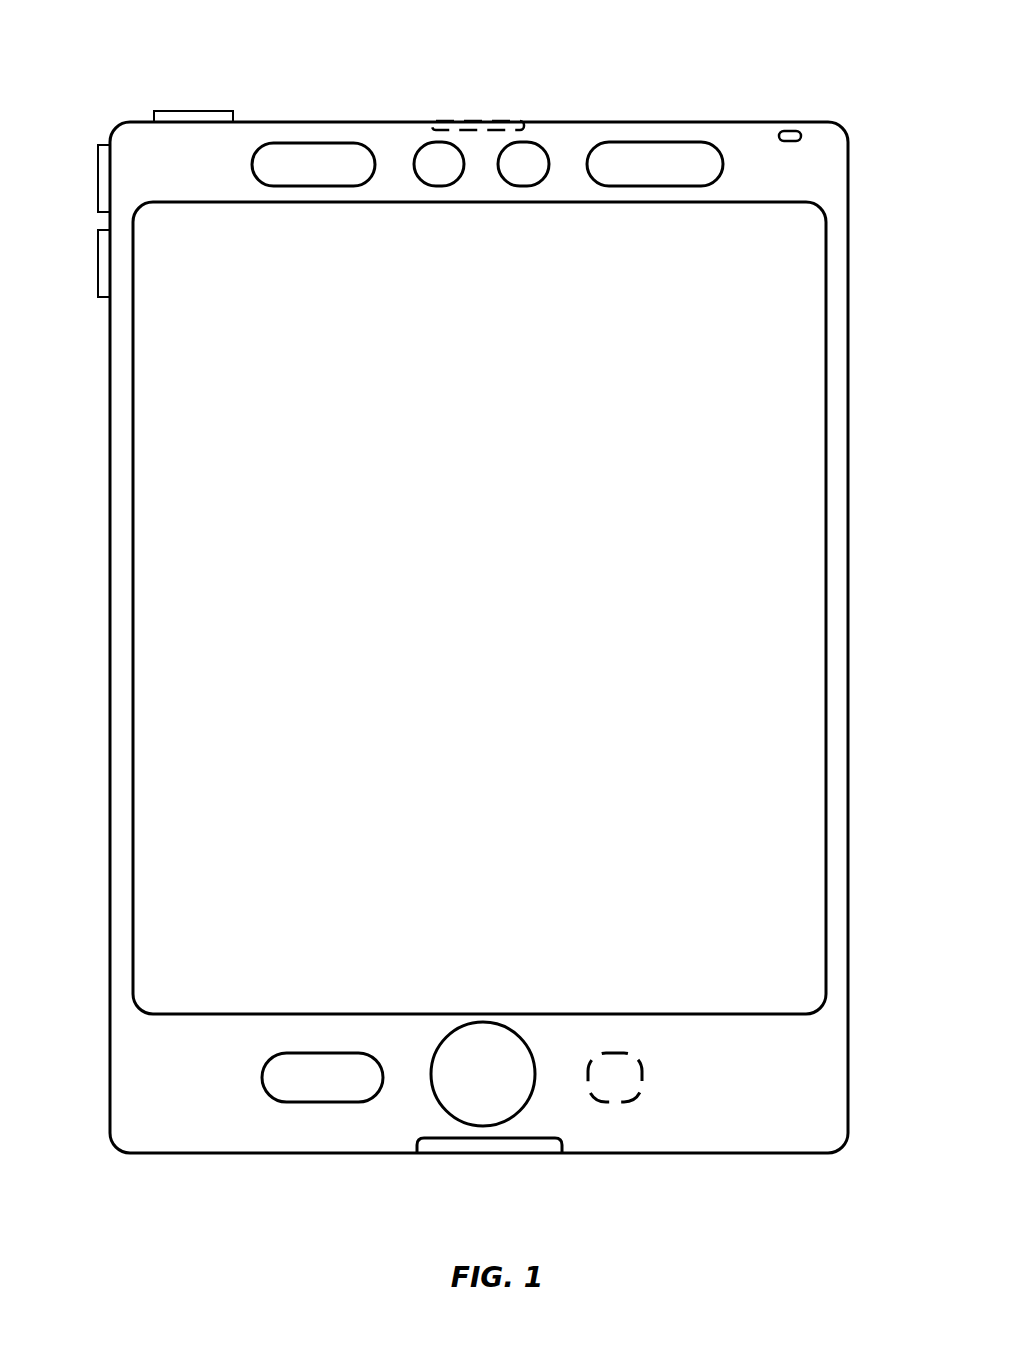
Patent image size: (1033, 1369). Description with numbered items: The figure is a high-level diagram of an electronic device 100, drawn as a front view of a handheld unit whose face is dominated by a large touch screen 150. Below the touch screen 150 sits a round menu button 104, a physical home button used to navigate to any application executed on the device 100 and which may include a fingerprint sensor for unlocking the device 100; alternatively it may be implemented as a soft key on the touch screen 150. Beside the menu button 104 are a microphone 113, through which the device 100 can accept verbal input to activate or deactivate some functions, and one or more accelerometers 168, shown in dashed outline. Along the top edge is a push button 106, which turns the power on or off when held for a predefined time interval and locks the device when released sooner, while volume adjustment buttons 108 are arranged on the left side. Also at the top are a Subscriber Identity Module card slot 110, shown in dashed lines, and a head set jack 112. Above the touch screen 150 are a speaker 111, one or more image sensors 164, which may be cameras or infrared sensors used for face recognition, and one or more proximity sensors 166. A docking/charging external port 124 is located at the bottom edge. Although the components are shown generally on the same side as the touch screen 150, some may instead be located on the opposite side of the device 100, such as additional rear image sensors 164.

The electronic device 100 is at (880, 122).
The menu button 104 is at (483, 1074).
The push button 106 is at (192, 111).
The volume adjustment buttons 108 is at (98, 177).
The Subscriber Identity Module (SIM) card slot 110 is at (483, 122).
The speaker 111 is at (313, 164).
The head set jack 112 is at (790, 131).
The microphone 113 is at (322, 1077).
The docking/charging external port 124 is at (490, 1155).
The touch screen 150 is at (825, 501).
The image sensors 164 is at (481, 164).
The proximity sensors 166 is at (655, 164).
The accelerometers 168 is at (615, 1077).